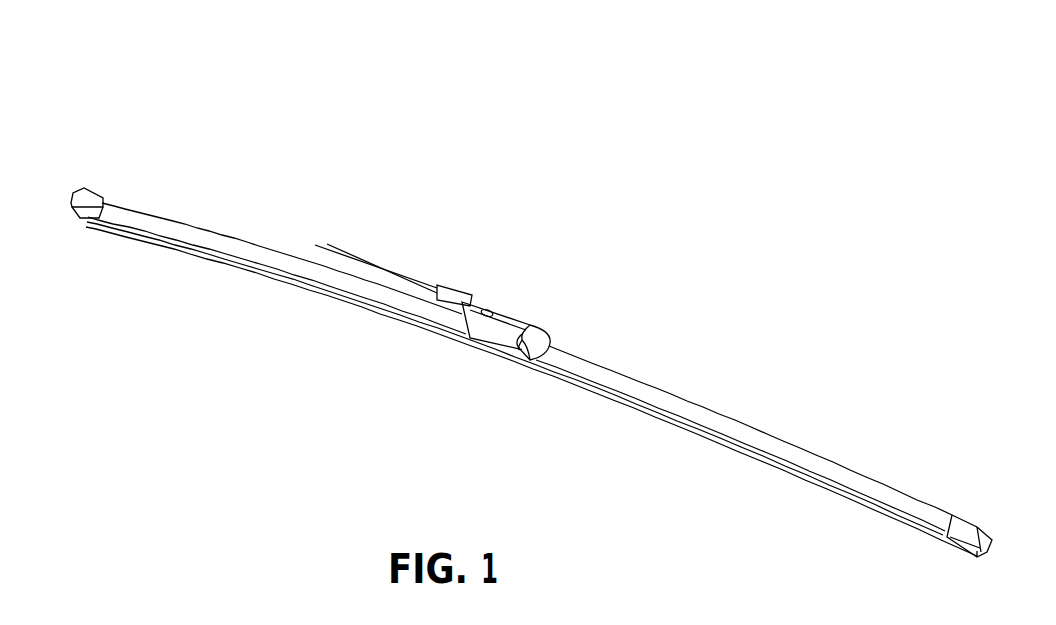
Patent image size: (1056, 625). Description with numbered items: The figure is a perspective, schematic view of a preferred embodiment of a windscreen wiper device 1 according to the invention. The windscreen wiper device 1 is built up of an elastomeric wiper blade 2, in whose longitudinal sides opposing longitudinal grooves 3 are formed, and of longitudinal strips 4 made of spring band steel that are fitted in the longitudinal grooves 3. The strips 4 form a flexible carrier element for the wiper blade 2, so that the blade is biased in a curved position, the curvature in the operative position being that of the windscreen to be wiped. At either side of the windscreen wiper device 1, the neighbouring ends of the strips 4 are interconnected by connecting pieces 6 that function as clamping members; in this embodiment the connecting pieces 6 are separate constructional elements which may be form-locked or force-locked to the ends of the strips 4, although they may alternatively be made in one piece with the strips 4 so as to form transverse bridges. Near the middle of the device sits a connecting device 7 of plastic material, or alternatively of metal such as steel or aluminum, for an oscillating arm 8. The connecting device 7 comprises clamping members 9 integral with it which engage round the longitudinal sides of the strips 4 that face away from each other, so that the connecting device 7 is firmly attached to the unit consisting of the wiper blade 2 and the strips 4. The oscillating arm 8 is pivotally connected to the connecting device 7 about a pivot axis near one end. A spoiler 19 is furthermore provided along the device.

The windscreen wiper device 1 is at (675, 193).
The wiper blade 2 is at (698, 433).
The longitudinal grooves 3 is at (780, 473).
The longitudinal strips 4 is at (640, 402).
The connecting pieces 6 is at (90, 197).
The connecting device 7 is at (540, 331).
The oscillating arm 8 is at (440, 286).
The clamping members 9 is at (532, 362).
The spoiler 19 is at (152, 218).